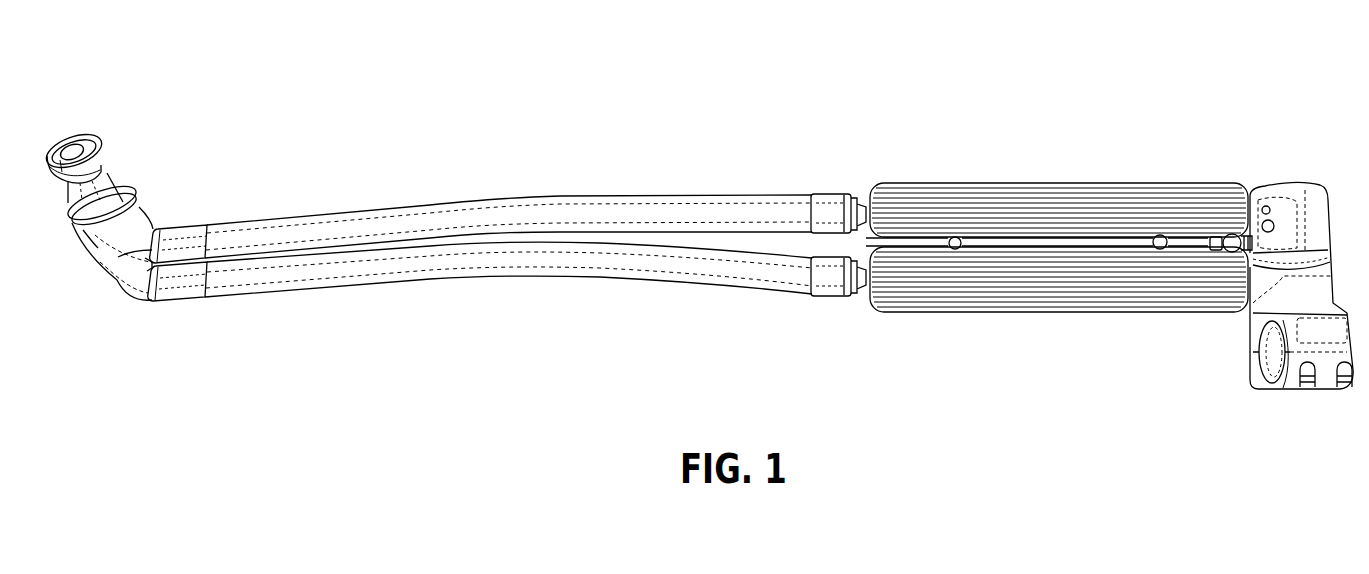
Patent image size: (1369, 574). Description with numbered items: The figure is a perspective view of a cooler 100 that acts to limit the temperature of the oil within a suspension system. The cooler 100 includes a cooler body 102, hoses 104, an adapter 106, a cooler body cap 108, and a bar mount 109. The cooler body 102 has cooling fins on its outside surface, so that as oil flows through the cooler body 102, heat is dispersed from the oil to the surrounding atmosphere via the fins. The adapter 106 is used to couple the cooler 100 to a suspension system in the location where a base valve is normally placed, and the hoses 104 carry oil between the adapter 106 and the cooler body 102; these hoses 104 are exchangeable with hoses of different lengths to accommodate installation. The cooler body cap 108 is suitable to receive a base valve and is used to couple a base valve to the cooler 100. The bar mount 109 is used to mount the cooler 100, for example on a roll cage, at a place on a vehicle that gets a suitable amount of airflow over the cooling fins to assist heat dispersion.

The cooler 100 is at (158, 46).
The cooler body 102 is at (1063, 223).
The hoses 104 is at (553, 210).
The adapter 106 is at (87, 243).
The cooler body cap 108 is at (1312, 202).
The bar mount 109 is at (1330, 352).